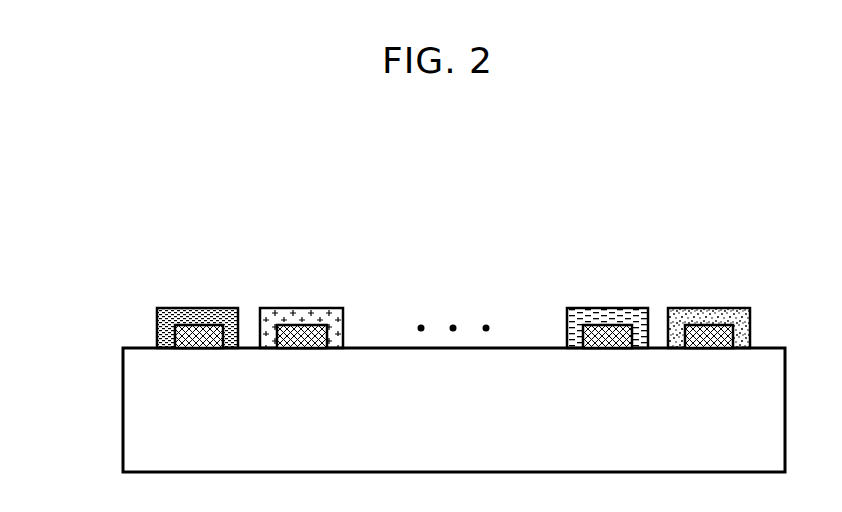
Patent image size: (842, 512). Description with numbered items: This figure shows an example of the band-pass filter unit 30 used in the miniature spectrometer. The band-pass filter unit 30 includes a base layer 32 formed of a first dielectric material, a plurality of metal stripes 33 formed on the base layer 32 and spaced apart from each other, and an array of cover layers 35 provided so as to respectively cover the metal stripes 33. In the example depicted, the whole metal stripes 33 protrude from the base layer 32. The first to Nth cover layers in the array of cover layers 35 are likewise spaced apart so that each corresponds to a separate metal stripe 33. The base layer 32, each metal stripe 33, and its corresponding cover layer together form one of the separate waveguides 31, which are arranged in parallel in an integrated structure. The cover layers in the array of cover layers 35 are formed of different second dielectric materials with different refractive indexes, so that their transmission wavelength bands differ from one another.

The band-pass filter unit 30 is at (113, 255).
The waveguide 31 is at (60, 322).
The base layer 32 is at (137, 428).
The metal stripe 33 is at (192, 349).
The array of cover layers 35 is at (147, 333).